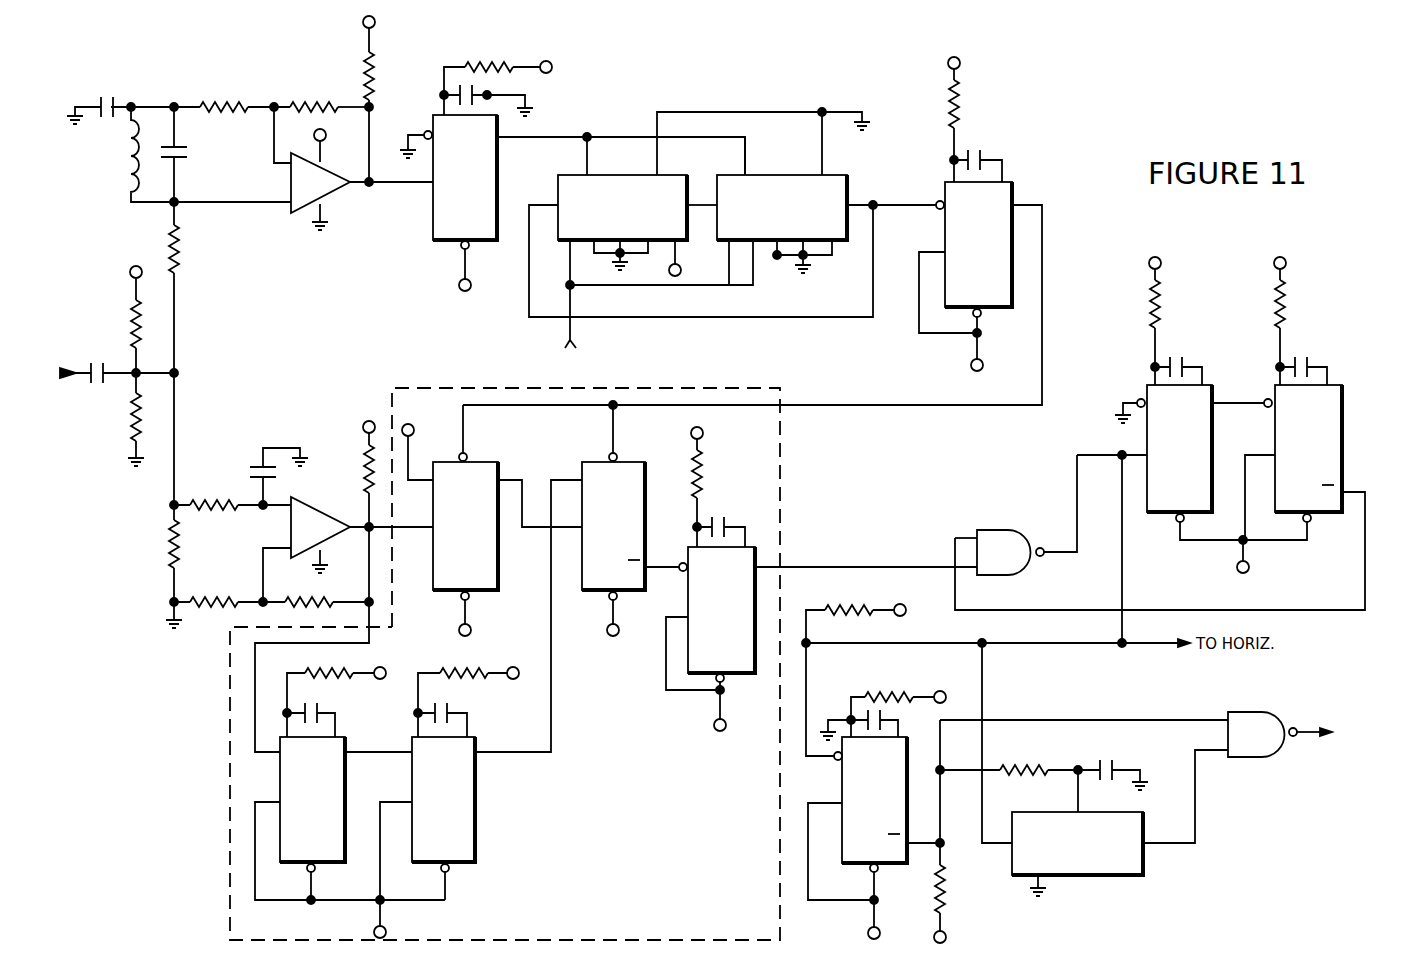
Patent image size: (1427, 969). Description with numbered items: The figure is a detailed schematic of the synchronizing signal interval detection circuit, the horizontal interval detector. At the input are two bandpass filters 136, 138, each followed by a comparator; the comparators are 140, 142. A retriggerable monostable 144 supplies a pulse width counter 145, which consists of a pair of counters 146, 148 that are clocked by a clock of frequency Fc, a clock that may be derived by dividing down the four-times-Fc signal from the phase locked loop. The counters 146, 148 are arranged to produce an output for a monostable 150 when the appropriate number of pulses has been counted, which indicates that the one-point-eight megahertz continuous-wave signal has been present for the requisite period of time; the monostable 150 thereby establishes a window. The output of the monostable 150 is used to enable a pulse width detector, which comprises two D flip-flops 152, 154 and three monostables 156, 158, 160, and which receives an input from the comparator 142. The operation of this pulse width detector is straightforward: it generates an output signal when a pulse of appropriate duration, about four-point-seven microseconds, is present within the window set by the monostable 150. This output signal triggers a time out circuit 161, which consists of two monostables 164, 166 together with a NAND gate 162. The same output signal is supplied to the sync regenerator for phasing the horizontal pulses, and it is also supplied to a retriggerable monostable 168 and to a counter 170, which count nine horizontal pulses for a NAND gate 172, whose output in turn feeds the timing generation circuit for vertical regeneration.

The bandpass filter 136 is at (222, 84).
The bandpass filter 138 is at (190, 481).
The comparator 140 is at (291, 184).
The comparator 142 is at (327, 514).
The retriggerable monostable 144 is at (500, 187).
The pulse width counter 145 is at (641, 102).
The counter 146 is at (637, 175).
The counter 148 is at (797, 175).
The monostable 150 is at (1012, 190).
The D flip-flop 152 is at (488, 462).
The D flip-flop 154 is at (633, 462).
The monostable 156 is at (758, 546).
The monostable 158 is at (347, 748).
The monostable 160 is at (478, 748).
The time out circuit 161 is at (1218, 363).
The NAND gate 162 is at (998, 529).
The monostable 164 is at (1213, 444).
The monostable 166 is at (1345, 441).
The retriggerable monostable 168 is at (842, 783).
The counter 170 is at (1050, 812).
The NAND gate 172 is at (1265, 712).